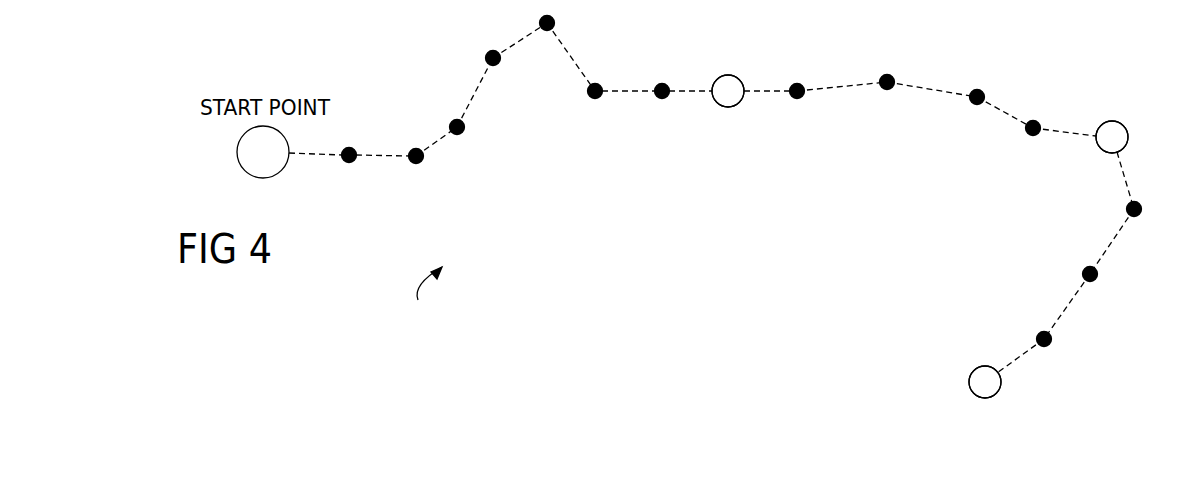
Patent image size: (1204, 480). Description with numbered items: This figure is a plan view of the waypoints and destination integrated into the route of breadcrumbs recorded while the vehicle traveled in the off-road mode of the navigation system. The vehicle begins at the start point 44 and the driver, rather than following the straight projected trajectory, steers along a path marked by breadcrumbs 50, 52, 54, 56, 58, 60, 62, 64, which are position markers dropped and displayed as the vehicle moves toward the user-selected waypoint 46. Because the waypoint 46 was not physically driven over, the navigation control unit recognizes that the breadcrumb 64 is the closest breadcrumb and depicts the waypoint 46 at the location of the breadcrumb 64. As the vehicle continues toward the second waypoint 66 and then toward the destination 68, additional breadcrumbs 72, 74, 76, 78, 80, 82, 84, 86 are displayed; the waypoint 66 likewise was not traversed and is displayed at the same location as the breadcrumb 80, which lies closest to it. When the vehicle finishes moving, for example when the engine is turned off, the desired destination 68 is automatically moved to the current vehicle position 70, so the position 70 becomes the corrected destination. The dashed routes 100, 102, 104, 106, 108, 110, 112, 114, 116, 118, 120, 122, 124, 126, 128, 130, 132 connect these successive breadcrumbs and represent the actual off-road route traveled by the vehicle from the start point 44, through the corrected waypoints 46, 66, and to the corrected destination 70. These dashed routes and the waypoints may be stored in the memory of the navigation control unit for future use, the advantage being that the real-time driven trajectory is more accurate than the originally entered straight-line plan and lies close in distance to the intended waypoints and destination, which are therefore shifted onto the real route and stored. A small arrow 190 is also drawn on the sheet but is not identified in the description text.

The start point 44 is at (238, 162).
The waypoint 46 is at (728, 75).
The breadcrumb 50 is at (349, 162).
The breadcrumb 52 is at (416, 163).
The breadcrumb 54 is at (461, 133).
The breadcrumb 56 is at (487, 56).
The breadcrumb 58 is at (540, 20).
The breadcrumb 60 is at (595, 98).
The breadcrumb 62 is at (662, 98).
The breadcrumb 64 is at (728, 107).
The waypoint 66 is at (1110, 121).
The destination 68 is at (970, 380).
The vehicle position 70 is at (985, 382).
The breadcrumb 72 is at (797, 98).
The breadcrumb 74 is at (882, 75).
The breadcrumb 76 is at (975, 89).
The breadcrumb 78 is at (1038, 121).
The breadcrumb 80 is at (1112, 137).
The breadcrumb 82 is at (1135, 217).
The breadcrumb 84 is at (1097, 280).
The breadcrumb 86 is at (1052, 343).
The dashed route 100 is at (317, 153).
The dashed route 102 is at (380, 153).
The dashed route 104 is at (437, 140).
The dashed route 106 is at (473, 92).
The dashed route 108 is at (522, 40).
The dashed route 110 is at (580, 53).
The dashed route 112 is at (630, 88).
The dashed route 114 is at (692, 88).
The dashed route 116 is at (767, 88).
The dashed route 118 is at (842, 88).
The dashed route 120 is at (932, 90).
The dashed route 122 is at (1003, 117).
The dashed route 124 is at (1070, 133).
The dashed route 126 is at (1123, 180).
The dashed route 128 is at (1113, 238).
The dashed route 130 is at (1067, 303).
The dashed route 132 is at (1015, 353).
The direction of travel 190 is at (418, 300).